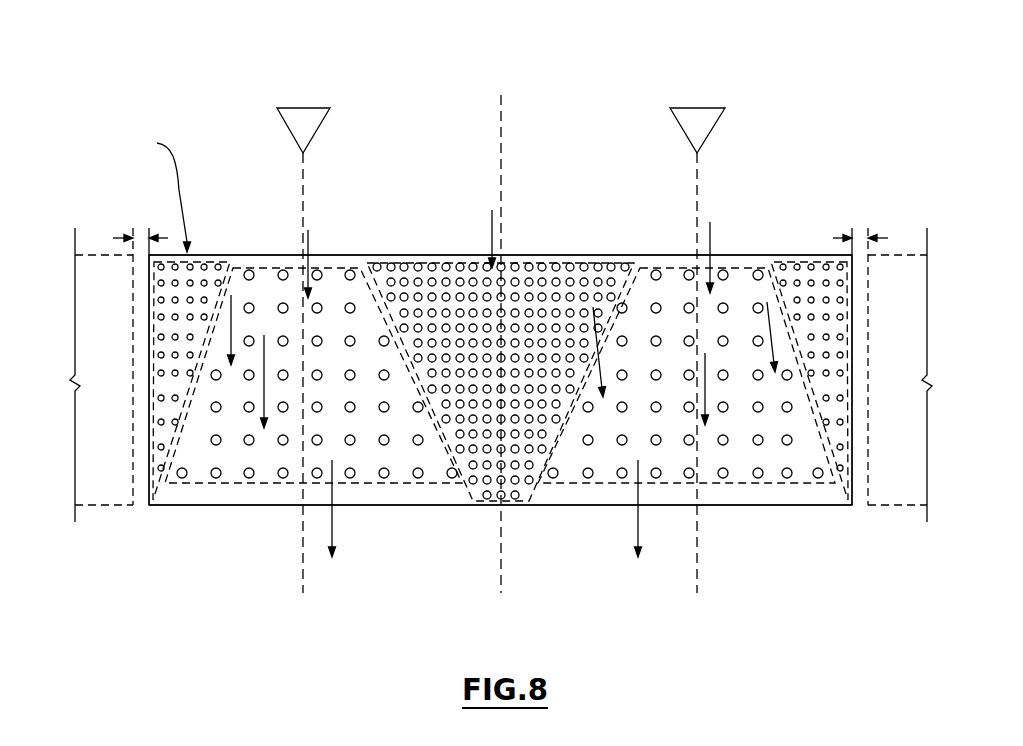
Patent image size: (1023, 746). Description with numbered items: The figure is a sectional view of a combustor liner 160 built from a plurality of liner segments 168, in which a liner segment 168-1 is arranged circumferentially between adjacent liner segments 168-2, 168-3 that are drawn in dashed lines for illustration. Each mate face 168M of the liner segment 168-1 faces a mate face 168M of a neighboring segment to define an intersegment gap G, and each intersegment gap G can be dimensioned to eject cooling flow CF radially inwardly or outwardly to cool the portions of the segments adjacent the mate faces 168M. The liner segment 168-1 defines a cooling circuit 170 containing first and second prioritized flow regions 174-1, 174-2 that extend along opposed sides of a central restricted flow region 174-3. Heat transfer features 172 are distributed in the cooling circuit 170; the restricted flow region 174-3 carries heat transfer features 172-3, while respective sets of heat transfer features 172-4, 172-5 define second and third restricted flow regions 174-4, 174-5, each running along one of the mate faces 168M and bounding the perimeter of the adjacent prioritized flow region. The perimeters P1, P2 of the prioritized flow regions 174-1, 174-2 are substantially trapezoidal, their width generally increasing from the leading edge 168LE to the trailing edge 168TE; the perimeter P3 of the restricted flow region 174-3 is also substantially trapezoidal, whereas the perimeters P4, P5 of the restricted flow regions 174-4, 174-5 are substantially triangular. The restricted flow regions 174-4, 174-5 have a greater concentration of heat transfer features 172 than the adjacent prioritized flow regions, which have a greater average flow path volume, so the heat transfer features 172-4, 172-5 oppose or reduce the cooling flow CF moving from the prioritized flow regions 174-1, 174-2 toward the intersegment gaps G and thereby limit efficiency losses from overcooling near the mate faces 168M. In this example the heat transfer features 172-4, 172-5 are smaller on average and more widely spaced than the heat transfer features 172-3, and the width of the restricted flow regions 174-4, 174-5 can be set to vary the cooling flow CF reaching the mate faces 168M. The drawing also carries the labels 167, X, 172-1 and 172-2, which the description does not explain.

The combustor liner 160 is at (151, 80).
The noise source 167 is at (316, 107).
The liner segments 168 is at (510, 314).
The liner segment 168-1 is at (172, 255).
The liner segment 168-2 is at (100, 256).
The liner segment 168-3 is at (897, 255).
The leading edge 168LE is at (548, 255).
The trailing edge 168TE is at (577, 505).
The mate face 168M is at (875, 550).
The cooling circuit 170 is at (252, 257).
The heat transfer features 172 is at (316, 326).
The first perforation pattern holes 172-1 is at (321, 268).
The second perforation pattern holes 172-2 is at (757, 268).
The heat transfer features 172-3 is at (431, 262).
The heat transfer features 172-4 is at (203, 262).
The heat transfer features 172-5 is at (797, 262).
The first prioritized flow region 174-1 is at (265, 283).
The second prioritized flow region 174-2 is at (664, 268).
The restricted flow region 174-3 is at (522, 264).
The second restricted flow region 174-4 is at (170, 315).
The third restricted flow region 174-5 is at (790, 262).
The intersegment gap G is at (165, 238).
The center axis X is at (503, 125).
The cooling flow CF is at (310, 288).
The perimeter P1 is at (270, 483).
The perimeter P2 is at (747, 483).
The perimeter P3 is at (540, 490).
The perimeter P4 is at (172, 455).
The perimeter P5 is at (815, 462).